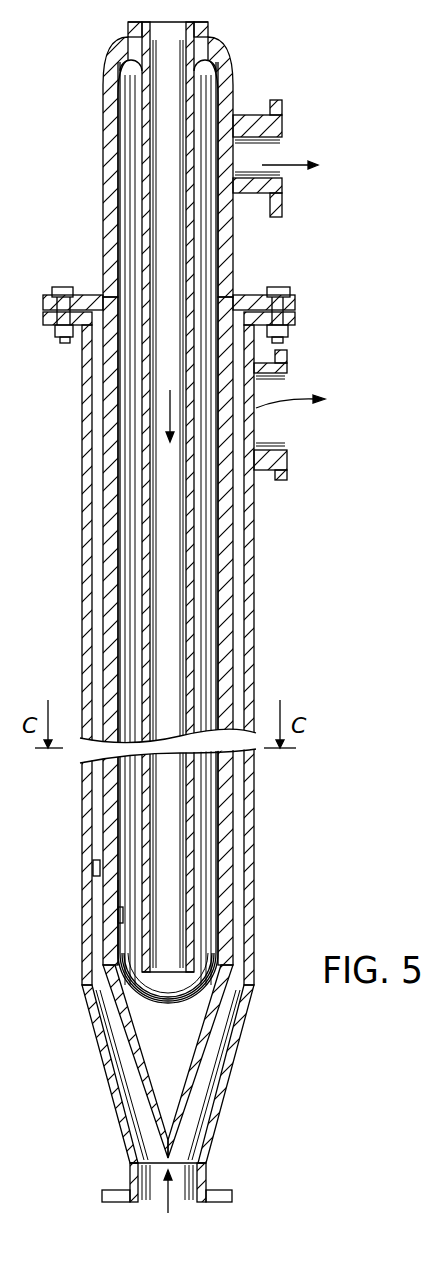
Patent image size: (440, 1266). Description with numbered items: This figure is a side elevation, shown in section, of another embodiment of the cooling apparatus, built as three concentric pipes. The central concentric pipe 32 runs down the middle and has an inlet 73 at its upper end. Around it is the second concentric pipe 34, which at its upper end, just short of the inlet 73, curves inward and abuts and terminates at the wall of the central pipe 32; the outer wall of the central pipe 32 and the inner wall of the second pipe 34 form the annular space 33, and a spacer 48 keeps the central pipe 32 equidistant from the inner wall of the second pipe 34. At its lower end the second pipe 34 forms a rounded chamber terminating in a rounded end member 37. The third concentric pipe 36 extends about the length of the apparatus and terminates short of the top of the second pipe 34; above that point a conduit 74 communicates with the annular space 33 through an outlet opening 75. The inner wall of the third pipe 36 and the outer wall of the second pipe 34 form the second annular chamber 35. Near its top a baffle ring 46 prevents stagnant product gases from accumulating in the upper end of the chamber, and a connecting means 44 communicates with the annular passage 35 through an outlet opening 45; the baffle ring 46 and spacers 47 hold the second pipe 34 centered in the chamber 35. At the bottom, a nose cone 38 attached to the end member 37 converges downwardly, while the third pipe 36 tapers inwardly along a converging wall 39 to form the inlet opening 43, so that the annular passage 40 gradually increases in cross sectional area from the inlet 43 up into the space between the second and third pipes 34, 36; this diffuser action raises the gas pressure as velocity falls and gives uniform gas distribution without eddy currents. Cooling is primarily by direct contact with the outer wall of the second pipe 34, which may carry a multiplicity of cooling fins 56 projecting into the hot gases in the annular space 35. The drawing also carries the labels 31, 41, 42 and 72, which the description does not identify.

The central feed tube 31 is at (178, 836).
The central concentric pipe 32 is at (140, 882).
The annular space 33 is at (208, 637).
The second concentric pipe 34 is at (112, 933).
The second annular chamber 35 is at (240, 593).
The third concentric pipe 36 is at (83, 964).
The rounded end member 37 is at (166, 1010).
The nose cone 38 is at (128, 1032).
The converging wall 39 is at (106, 1066).
The annular passage 40 is at (215, 1055).
The bottom outlet nozzle 41 is at (195, 1175).
The bottom flange 42 is at (110, 1197).
The inlet opening 43 is at (225, 1200).
The connecting means 44 is at (270, 478).
The outlet opening 45 is at (260, 438).
The baffle ring 46 is at (278, 388).
The spacers 47 is at (93, 868).
The spacer 48 is at (124, 912).
The cooling fins 56 is at (236, 830).
The top closure 72 is at (128, 24).
The inlet 73 is at (215, 22).
The conduit 74 is at (253, 118).
The outlet opening 75 is at (263, 152).